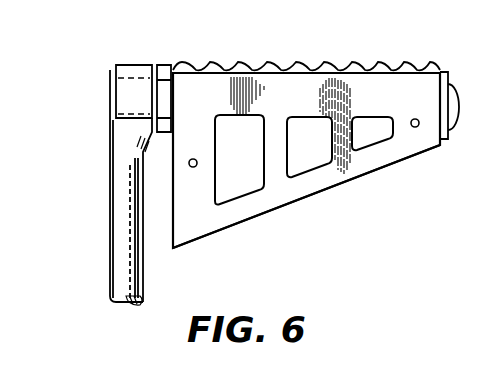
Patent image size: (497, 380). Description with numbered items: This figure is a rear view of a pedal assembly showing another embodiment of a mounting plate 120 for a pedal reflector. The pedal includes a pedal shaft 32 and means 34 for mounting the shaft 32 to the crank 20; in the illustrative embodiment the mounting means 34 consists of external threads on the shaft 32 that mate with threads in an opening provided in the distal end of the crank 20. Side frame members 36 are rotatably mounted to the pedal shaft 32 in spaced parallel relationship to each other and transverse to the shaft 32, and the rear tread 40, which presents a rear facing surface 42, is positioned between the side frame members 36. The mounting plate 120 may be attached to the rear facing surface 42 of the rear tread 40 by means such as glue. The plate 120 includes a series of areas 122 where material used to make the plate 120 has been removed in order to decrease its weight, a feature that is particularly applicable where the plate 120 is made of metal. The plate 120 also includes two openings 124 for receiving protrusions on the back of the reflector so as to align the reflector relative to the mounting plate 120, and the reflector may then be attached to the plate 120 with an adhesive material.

The crank 20 is at (120, 270).
The pedal shaft 32 is at (134, 77).
The means for mounting the shaft 34 is at (166, 62).
The side frame members 36 is at (443, 72).
The rear tread 40 is at (361, 63).
The rear facing surface 42 is at (294, 75).
The mounting plate 120 is at (342, 150).
The areas 122 is at (245, 204).
The openings 124 is at (190, 167).